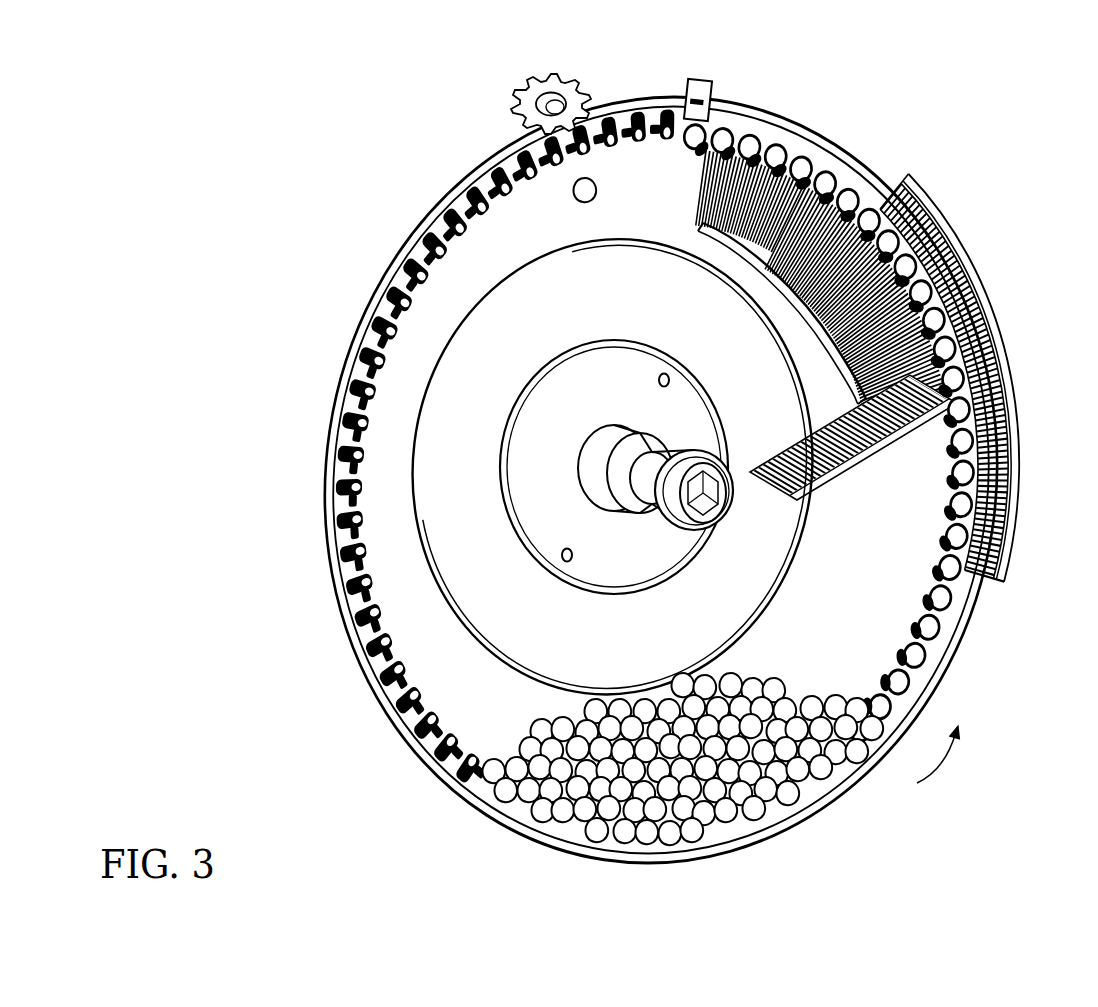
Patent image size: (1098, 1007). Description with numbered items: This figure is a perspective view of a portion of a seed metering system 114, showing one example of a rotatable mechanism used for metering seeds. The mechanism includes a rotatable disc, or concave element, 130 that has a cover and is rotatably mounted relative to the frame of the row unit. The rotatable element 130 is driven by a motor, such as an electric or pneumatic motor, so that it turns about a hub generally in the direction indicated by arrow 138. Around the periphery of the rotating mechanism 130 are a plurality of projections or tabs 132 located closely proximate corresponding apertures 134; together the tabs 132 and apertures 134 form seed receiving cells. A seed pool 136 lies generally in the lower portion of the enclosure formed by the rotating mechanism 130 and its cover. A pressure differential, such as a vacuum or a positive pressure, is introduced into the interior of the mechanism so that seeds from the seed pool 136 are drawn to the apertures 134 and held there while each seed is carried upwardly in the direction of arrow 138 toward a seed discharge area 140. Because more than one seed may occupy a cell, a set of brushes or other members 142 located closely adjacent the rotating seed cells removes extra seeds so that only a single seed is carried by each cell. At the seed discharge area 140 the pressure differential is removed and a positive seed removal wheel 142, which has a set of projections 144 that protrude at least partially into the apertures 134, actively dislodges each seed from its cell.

The seed meter 114 is at (1012, 165).
The rotatable disc 130 is at (337, 385).
The tabs 132 is at (350, 485).
The apertures 134 is at (356, 490).
The seed pool 136 is at (803, 797).
The arrow 138 is at (940, 767).
The seed discharge area 140 is at (627, 92).
The brushes 142 is at (553, 88).
The projections 144 is at (533, 76).